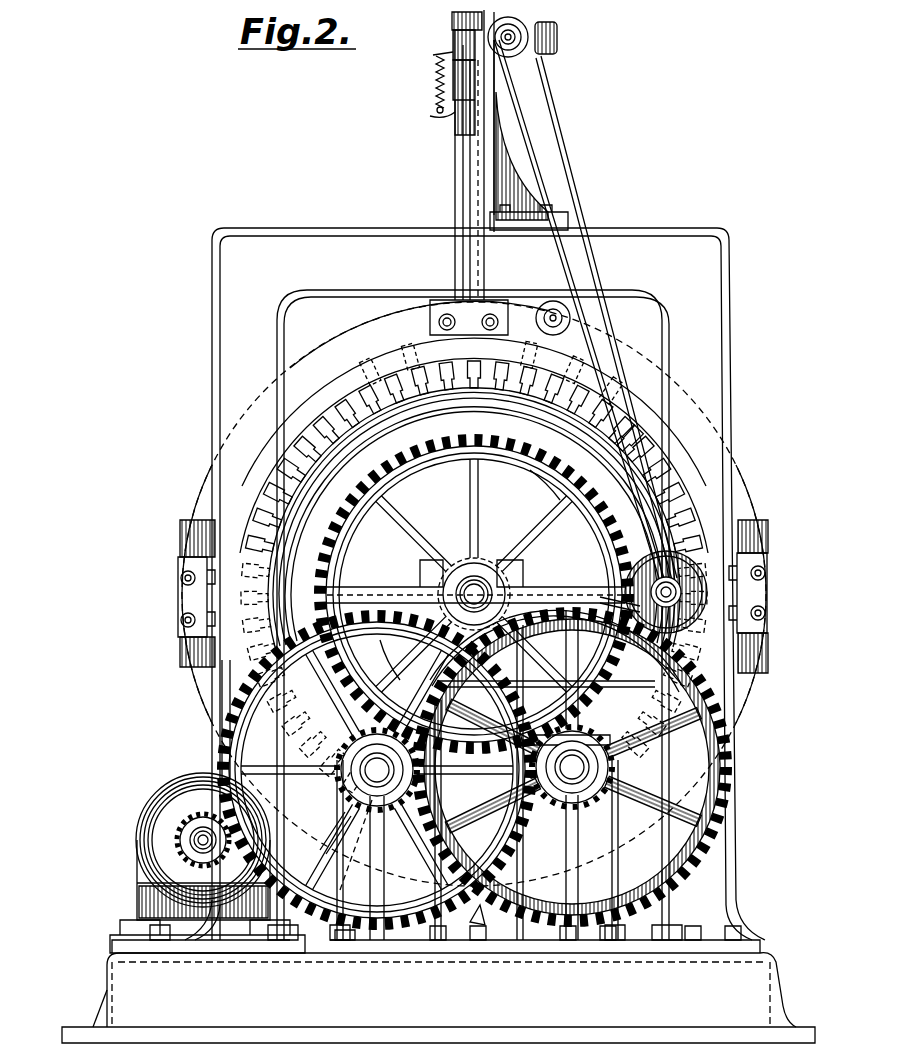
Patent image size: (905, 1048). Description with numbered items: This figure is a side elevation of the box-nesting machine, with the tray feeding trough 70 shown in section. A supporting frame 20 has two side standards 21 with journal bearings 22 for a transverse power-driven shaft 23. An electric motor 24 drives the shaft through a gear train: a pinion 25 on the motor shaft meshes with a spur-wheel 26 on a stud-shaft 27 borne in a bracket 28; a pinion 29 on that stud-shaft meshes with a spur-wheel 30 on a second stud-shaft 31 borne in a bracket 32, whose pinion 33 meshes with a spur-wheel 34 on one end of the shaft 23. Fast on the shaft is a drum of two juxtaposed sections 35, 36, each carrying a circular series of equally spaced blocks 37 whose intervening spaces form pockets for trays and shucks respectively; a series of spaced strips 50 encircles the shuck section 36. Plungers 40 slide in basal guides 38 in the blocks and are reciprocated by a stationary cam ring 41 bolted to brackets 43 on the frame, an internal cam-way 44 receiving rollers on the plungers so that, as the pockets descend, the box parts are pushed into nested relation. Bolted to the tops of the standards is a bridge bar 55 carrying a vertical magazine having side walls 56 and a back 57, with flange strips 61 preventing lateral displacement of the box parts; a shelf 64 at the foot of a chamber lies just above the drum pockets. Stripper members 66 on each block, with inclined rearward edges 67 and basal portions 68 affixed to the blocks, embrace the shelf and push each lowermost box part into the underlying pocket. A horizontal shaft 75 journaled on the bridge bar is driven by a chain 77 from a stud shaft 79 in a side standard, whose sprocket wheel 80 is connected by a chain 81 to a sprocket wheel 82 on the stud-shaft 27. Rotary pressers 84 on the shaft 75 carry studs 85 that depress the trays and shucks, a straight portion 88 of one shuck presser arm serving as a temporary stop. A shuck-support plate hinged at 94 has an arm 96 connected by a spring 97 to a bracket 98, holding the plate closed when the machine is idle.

The supporting frame 20 is at (438, 984).
The side standards 21 is at (212, 329).
The journal bearings 22 is at (412, 580).
The power-driven shaft 23 is at (474, 594).
The electric motor 24 is at (150, 845).
The pinion 25 is at (178, 858).
The spur-wheel 26 is at (230, 737).
The stud-shaft 27 is at (377, 770).
The bracket 28 is at (362, 900).
The pinion 29 is at (335, 848).
The spur-wheel 30 is at (722, 808).
The stud-shaft 31 is at (572, 767).
The bracket 32 is at (600, 898).
The pinion 33 is at (592, 690).
The spur-wheel 34 is at (474, 583).
The drum section 35 is at (300, 480).
The drum section 36 is at (355, 372).
The blocks 37 is at (340, 430).
The basal guides 38 is at (648, 440).
The plungers 40 is at (600, 398).
The ring 41 is at (185, 548).
The brackets 43 is at (433, 305).
The cam-way 44 is at (566, 330).
The strips 50 is at (540, 482).
The bridge bar 55 is at (456, 140).
The side walls 56 is at (470, 158).
The back 57 is at (482, 178).
The flange strips 61 is at (455, 200).
The shelf 64 is at (455, 452).
The stripper members 66 is at (225, 680).
The inclined rearward edges 67 is at (330, 385).
The basal portions 68 is at (398, 365).
The tray feeding trough 70 is at (450, 38).
The horizontal shaft 75 is at (520, 62).
The chain 77 is at (578, 164).
The stud shaft 79 is at (678, 588).
The sprocket wheel 80 is at (700, 565).
The chain 81 is at (605, 590).
The sprocket wheel 82 is at (378, 842).
The rotary pressers 84 is at (532, 42).
The studs 85 is at (560, 28).
The straight portion 88 is at (452, 20).
The hinge 94 is at (433, 80).
The arm 96 is at (448, 58).
The spring 97 is at (437, 108).
The bracket 98 is at (446, 115).